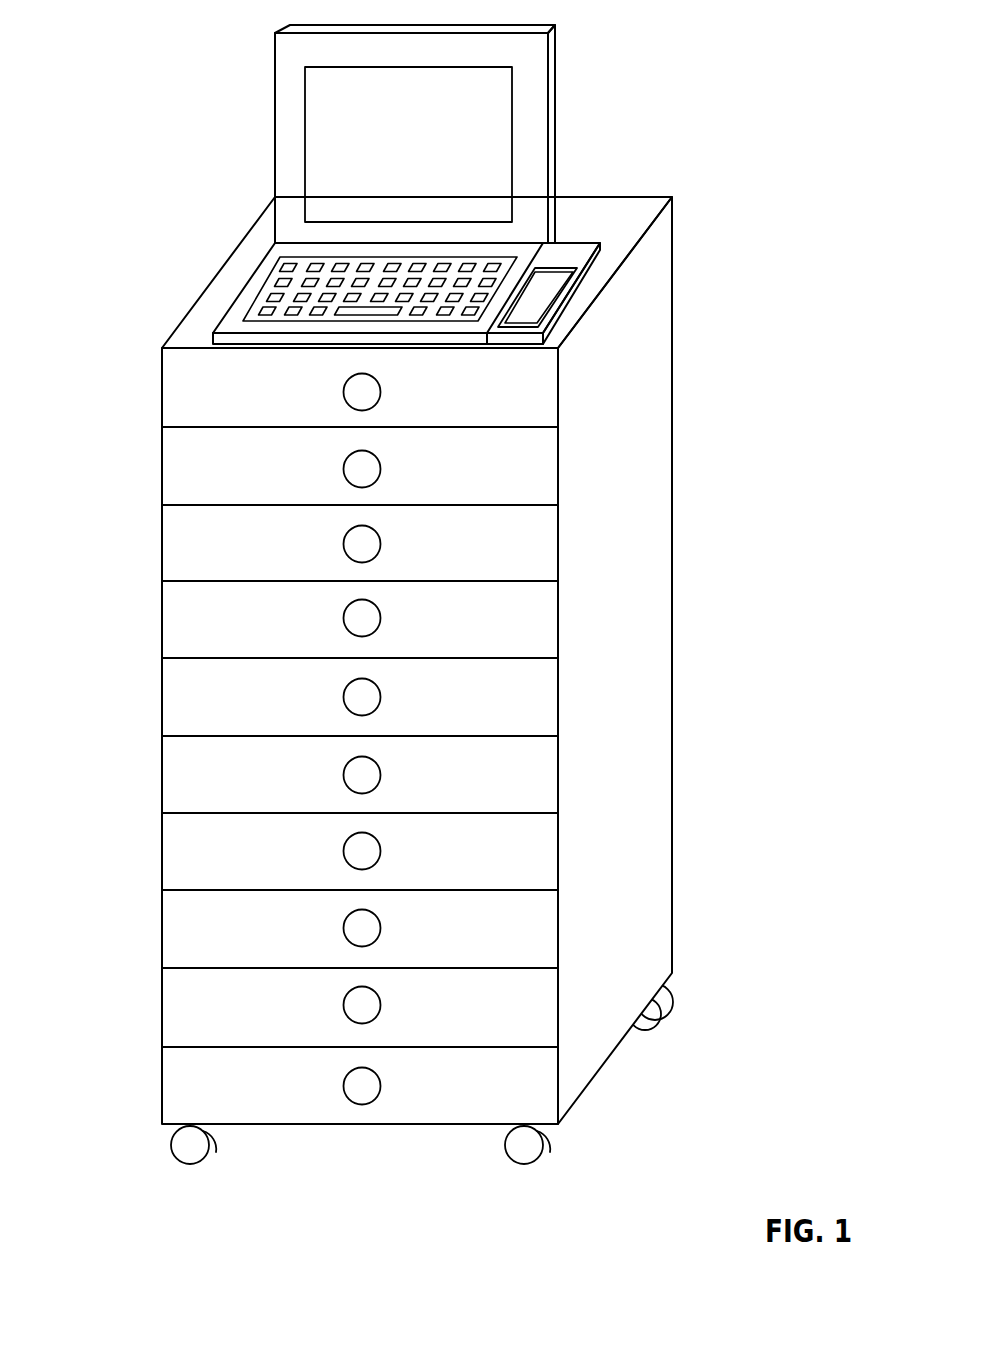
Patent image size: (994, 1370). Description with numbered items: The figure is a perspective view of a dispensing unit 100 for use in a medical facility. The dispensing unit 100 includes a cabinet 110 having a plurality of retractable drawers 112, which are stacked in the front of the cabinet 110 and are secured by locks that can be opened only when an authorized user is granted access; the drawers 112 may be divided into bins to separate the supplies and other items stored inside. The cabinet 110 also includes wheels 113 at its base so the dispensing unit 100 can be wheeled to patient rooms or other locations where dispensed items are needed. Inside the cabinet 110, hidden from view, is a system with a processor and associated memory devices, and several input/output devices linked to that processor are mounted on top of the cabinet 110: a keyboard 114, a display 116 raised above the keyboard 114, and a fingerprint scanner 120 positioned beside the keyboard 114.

The dispensing unit 100 is at (398, 594).
The cabinet 110 is at (638, 453).
The retractable drawers 112 is at (180, 483).
The wheels 113 is at (652, 1013).
The keyboard 114 is at (238, 305).
The display 116 is at (555, 86).
The fingerprint scanner 120 is at (577, 285).